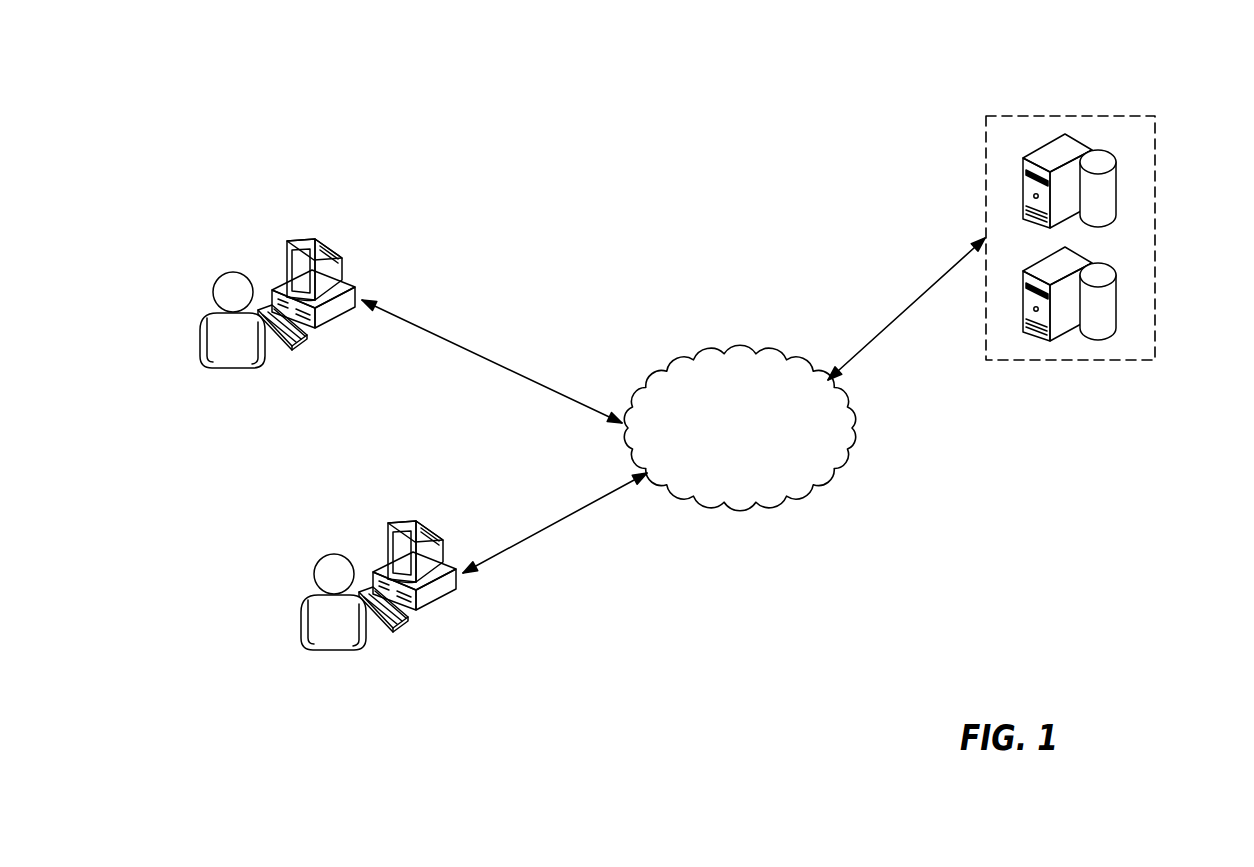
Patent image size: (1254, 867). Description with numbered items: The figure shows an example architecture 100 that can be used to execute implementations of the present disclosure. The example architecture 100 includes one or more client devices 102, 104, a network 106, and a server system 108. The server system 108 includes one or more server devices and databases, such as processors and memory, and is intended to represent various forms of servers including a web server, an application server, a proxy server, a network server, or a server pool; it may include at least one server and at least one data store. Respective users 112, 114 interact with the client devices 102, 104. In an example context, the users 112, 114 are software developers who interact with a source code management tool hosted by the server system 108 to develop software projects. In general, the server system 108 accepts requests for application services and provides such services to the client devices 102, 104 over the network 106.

The example architecture 100 is at (589, 116).
The client device 102 is at (282, 249).
The client device 104 is at (385, 531).
The network 106 is at (747, 354).
The server system 108 is at (1155, 238).
The user 112 is at (233, 368).
The user 114 is at (335, 650).